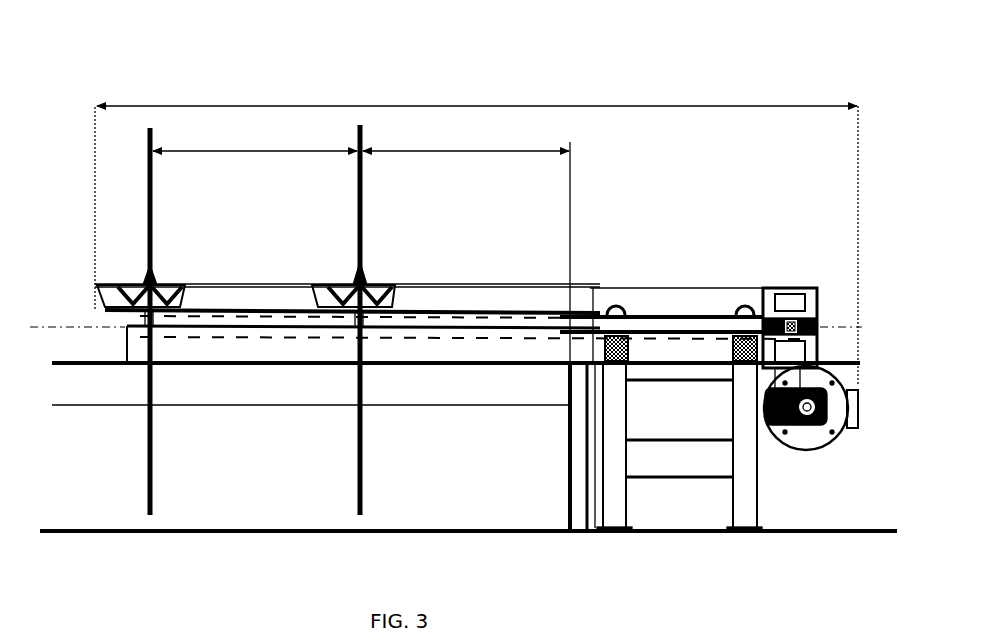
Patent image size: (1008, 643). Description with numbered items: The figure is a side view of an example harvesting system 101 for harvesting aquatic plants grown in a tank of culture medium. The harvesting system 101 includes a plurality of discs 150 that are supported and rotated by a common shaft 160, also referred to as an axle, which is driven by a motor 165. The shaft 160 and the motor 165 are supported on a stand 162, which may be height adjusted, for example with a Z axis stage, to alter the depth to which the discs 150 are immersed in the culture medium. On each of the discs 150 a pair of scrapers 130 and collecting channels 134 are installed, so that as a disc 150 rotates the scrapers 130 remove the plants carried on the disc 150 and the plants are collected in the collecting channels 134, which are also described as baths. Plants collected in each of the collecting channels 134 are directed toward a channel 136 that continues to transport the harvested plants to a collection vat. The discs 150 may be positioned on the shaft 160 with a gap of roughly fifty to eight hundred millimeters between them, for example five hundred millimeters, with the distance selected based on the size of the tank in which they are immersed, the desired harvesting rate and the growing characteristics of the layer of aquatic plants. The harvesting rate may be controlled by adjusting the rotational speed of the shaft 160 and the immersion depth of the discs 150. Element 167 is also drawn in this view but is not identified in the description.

The harvesting system 101 is at (240, 85).
The scraper 130 is at (148, 280).
The collecting channel 134 is at (122, 283).
The channel 136 is at (150, 340).
The disc 150 is at (148, 128).
The shaft 160 is at (678, 313).
The stand 162 is at (760, 492).
The motor 165 is at (817, 312).
The motor 167 is at (840, 405).